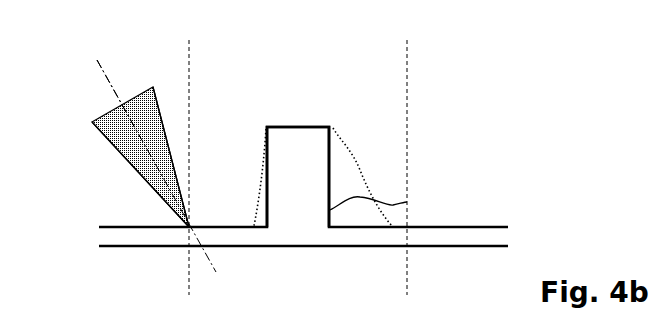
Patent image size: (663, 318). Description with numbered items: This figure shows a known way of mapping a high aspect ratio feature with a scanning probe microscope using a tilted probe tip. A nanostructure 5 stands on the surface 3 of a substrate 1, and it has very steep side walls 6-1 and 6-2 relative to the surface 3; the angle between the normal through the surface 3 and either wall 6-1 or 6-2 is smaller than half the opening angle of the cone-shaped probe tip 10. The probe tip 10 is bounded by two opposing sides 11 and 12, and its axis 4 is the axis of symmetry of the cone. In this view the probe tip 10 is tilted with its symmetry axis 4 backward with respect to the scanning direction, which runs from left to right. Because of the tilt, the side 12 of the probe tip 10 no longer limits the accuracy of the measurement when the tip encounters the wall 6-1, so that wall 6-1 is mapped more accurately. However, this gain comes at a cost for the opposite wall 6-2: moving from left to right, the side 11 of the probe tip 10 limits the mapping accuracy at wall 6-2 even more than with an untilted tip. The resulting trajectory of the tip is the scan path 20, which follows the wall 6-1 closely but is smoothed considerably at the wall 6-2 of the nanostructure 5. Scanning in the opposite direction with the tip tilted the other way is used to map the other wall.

The substrate 1 is at (347, 237).
The surface 3 is at (489, 227).
The axis 4 is at (110, 87).
The nanostructure 5 is at (305, 135).
The wall 6-1 is at (260, 212).
The wall 6-2 is at (407, 202).
The probe tip 10 is at (130, 97).
The side 11 is at (123, 160).
The side 12 is at (167, 138).
The scan path 20 is at (358, 168).